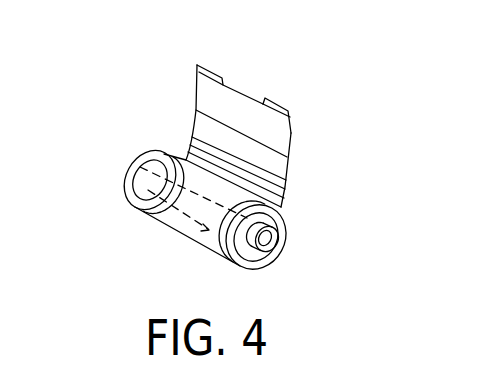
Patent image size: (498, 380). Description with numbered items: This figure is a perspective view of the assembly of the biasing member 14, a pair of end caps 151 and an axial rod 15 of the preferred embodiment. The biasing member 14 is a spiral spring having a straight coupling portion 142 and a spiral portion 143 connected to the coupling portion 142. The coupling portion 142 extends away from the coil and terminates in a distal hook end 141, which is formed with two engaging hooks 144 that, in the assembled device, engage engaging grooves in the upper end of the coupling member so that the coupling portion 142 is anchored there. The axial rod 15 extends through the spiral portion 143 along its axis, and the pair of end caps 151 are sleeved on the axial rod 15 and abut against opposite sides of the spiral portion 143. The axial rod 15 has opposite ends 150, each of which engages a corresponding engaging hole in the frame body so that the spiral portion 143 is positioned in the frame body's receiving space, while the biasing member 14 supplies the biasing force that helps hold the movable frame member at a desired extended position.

The biasing member 14 is at (323, 197).
The distal hook end 141 is at (242, 90).
The coupling portion 142 is at (287, 157).
The spiral portion 143 is at (181, 234).
The engaging hooks 144 is at (292, 122).
The axial rod 15 is at (198, 242).
The opposite ends 150 is at (126, 173).
The end caps 151 is at (158, 150).